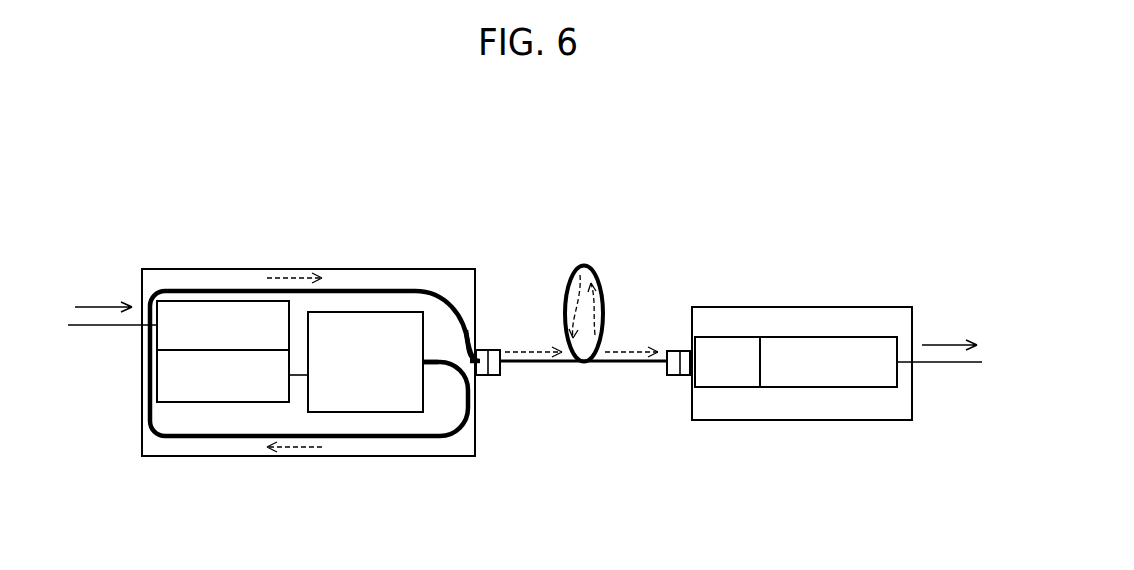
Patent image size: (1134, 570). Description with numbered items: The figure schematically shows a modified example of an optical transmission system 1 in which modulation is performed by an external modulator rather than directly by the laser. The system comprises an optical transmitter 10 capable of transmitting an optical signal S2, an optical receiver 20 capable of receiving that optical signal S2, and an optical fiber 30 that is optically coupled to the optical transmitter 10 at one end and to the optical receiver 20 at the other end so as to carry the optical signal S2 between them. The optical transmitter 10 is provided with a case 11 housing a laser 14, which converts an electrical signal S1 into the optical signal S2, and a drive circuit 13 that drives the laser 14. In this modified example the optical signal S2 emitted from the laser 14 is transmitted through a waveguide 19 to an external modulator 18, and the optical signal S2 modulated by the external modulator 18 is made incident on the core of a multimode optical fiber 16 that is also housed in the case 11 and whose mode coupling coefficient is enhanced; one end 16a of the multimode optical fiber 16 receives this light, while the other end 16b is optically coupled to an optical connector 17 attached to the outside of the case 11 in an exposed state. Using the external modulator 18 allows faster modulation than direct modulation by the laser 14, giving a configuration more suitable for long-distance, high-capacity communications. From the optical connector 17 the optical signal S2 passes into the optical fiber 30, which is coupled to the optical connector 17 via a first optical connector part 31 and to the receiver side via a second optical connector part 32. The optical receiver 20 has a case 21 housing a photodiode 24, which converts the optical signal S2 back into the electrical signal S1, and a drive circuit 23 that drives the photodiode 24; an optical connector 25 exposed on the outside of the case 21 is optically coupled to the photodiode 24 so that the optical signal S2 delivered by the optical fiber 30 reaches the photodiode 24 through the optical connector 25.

The optical transmission system 1 is at (826, 206).
The optical transmitter 10 is at (376, 268).
The case 11 is at (181, 457).
The drive circuit 13 is at (195, 300).
The laser 14 is at (157, 378).
The multimode optical fiber 16 is at (353, 440).
The one end of the multimode optical fiber 16a is at (410, 366).
The other end of the multimode optical fiber 16b is at (461, 345).
The optical connector 17 is at (478, 380).
The external modulator 18 is at (356, 312).
The waveguide 19 is at (298, 380).
The optical receiver 20 is at (821, 307).
The case 21 is at (868, 422).
The drive circuit 23 is at (795, 390).
The photodiode 24 is at (718, 390).
The optical connector 25 is at (688, 382).
The optical fiber 30 is at (597, 273).
The first optical connector part 31 is at (488, 378).
The second optical connector part 32 is at (668, 378).
The electrical signal S1 is at (95, 305).
The optical signal S2 is at (290, 276).